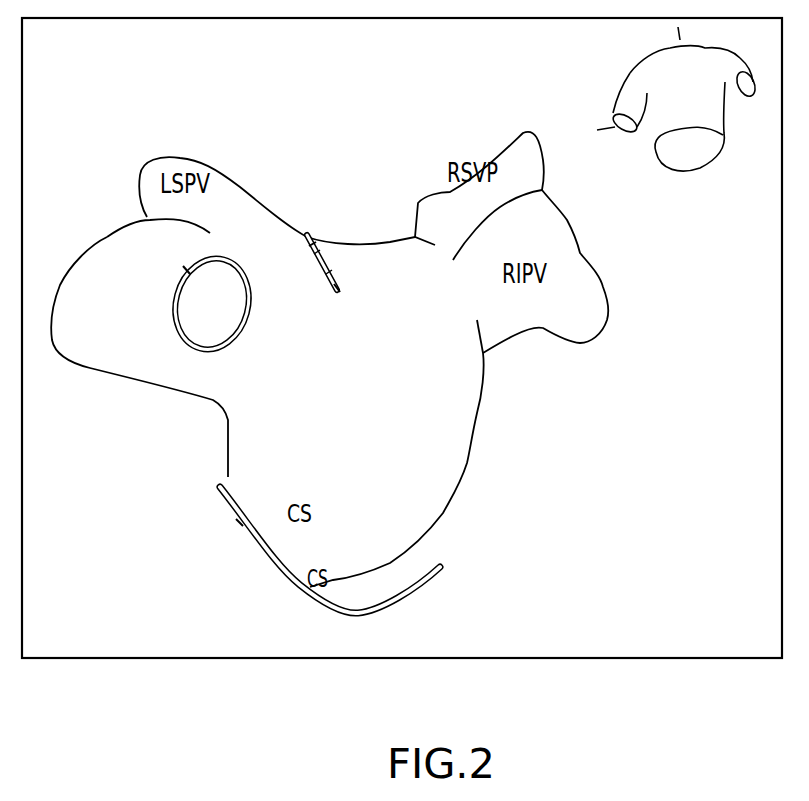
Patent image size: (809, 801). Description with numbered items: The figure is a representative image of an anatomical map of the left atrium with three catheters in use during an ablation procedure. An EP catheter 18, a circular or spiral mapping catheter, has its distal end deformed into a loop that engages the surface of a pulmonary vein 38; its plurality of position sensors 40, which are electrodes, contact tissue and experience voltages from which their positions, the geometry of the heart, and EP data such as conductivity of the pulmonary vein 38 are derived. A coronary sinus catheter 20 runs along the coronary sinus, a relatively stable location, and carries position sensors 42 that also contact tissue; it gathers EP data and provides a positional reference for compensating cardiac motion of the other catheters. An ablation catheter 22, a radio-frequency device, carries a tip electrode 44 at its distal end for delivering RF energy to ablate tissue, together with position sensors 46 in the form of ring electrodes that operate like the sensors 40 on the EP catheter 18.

The EP catheter 18 is at (192, 262).
The coronary sinus catheter 20 is at (273, 567).
The ablation catheter 22 is at (325, 240).
The pulmonary vein 38 is at (120, 337).
The position sensors 40 is at (185, 270).
The position sensors 42 is at (237, 522).
The tip electrode 44 is at (313, 240).
The position sensors 46 is at (340, 272).